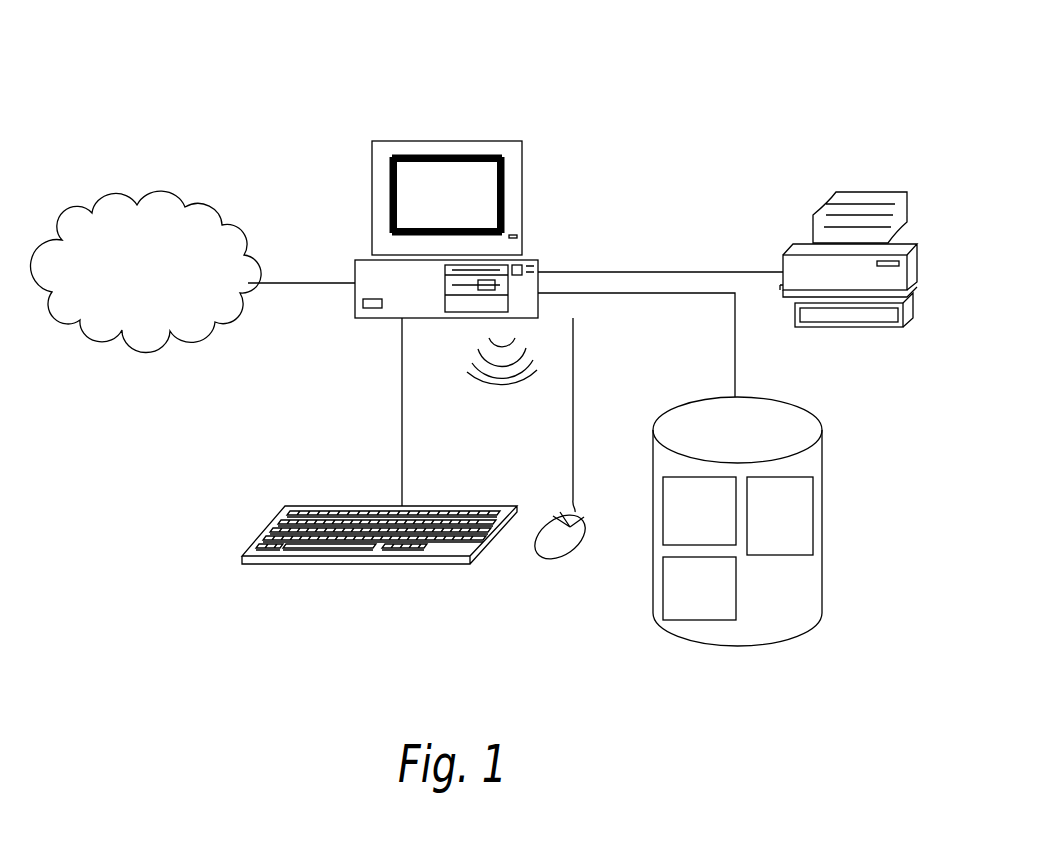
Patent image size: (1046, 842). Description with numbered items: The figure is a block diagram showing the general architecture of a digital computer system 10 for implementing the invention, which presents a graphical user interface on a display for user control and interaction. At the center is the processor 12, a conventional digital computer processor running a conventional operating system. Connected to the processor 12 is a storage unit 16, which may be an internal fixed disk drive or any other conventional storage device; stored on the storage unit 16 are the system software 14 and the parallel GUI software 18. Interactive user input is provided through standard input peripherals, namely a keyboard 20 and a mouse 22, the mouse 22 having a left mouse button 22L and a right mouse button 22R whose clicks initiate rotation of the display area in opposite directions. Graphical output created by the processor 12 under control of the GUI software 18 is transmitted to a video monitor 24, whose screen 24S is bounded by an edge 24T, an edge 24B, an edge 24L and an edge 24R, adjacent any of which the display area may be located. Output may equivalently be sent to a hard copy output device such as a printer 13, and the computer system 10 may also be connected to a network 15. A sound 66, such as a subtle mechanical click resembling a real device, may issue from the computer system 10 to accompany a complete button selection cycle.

The digital computer system 10 is at (615, 124).
The processor 12 is at (366, 303).
The printer 13 is at (850, 287).
The system software 14 is at (713, 516).
The network 15 is at (217, 280).
The storage unit 16 is at (750, 442).
The parallel GUI software 18 is at (796, 523).
The keyboard 20 is at (448, 554).
The mouse 22 is at (547, 557).
The left mouse button 22L is at (559, 511).
The right mouse button 22R is at (582, 518).
The video monitor 24 is at (527, 158).
The screen 24S is at (467, 172).
The top edge 24T is at (430, 152).
The left edge 24L is at (389, 184).
The right edge 24R is at (506, 210).
The bottom edge 24B is at (419, 225).
The sound 66 is at (472, 378).